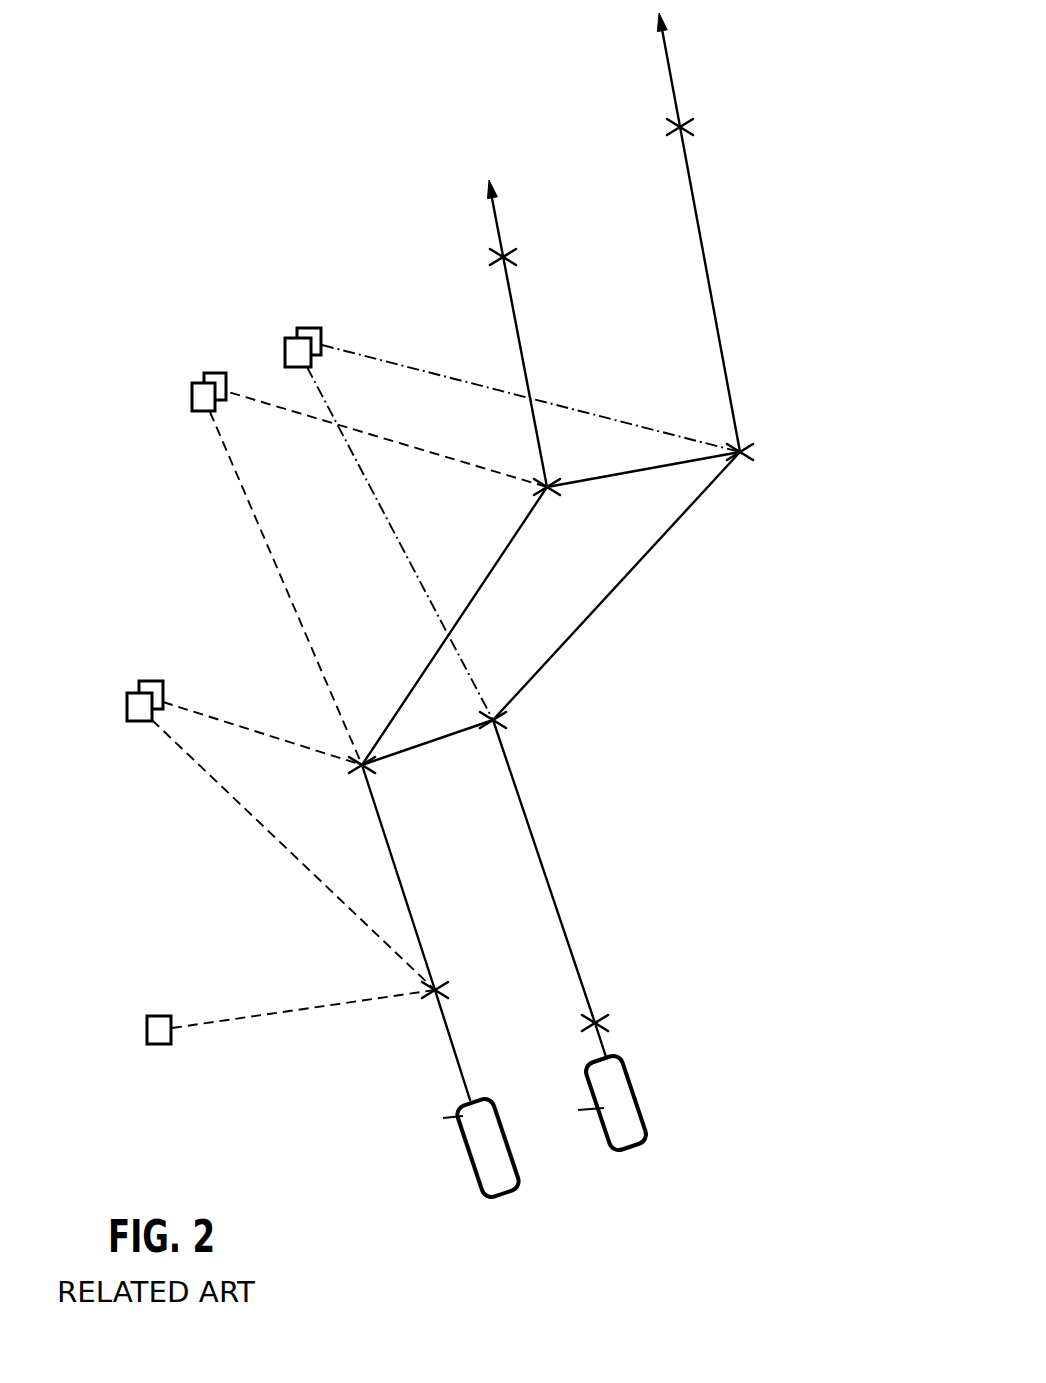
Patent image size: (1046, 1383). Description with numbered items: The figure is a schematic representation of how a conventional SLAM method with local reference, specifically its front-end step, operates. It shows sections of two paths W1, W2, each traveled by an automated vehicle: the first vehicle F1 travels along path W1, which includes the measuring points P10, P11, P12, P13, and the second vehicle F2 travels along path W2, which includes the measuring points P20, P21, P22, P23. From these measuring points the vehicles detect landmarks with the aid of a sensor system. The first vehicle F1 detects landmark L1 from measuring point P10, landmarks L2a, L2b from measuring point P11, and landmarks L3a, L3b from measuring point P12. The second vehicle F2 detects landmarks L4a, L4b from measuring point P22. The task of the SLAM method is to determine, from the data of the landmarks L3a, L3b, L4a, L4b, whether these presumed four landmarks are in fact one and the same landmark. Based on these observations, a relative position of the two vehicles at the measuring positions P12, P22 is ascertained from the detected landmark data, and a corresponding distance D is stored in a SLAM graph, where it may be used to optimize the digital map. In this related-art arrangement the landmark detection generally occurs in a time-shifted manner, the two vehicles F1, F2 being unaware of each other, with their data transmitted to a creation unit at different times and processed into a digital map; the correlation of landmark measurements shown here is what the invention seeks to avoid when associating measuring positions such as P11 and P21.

The path W1 is at (408, 907).
The path W2 is at (550, 880).
The distance D is at (606, 478).
The measuring point P10 is at (441, 993).
The measuring point P11 is at (368, 769).
The measuring point P12 is at (549, 494).
The measuring point P13 is at (512, 257).
The measuring point P20 is at (603, 1022).
The measuring point P21 is at (500, 719).
The measuring point P22 is at (748, 450).
The measuring point P23 is at (690, 127).
The landmark L1 is at (158, 1015).
The landmark L2a is at (133, 693).
The landmark L2b is at (152, 681).
The landmark L3a is at (198, 383).
The landmark L3b is at (212, 373).
The landmark L4a is at (290, 338).
The landmark L4b is at (307, 327).
The vehicle F1 is at (500, 1197).
The vehicle F2 is at (633, 1152).